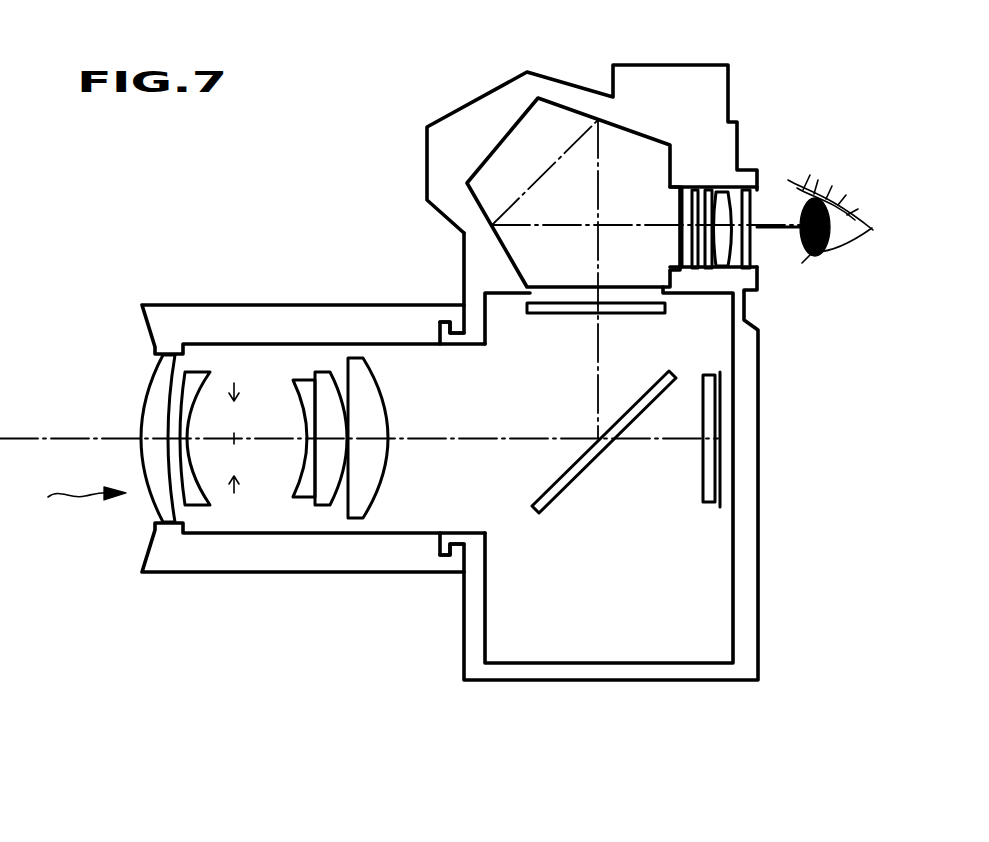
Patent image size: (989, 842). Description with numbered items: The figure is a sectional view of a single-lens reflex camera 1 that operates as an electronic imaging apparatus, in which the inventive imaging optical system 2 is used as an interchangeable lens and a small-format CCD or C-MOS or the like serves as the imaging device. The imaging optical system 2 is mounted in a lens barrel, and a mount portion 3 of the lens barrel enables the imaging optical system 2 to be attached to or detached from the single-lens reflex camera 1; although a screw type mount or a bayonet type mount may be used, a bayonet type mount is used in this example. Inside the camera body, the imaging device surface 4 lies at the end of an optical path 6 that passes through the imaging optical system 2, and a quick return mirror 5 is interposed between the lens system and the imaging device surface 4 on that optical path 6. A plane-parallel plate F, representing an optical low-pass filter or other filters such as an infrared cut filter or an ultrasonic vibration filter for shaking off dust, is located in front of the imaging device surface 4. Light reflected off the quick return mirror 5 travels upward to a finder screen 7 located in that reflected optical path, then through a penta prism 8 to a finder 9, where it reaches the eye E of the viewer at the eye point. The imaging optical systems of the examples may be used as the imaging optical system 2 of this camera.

The single-lens reflex camera 1 is at (758, 540).
The imaging optical system 2 is at (74, 497).
The mount portion 3 is at (446, 570).
The imaging device surface 4 is at (722, 458).
The quick return mirror 5 is at (555, 493).
The optical path 6 is at (63, 437).
The finder screen 7 is at (663, 313).
The penta prism 8 is at (517, 120).
The finder 9 is at (762, 282).
The eye of the viewer E is at (840, 218).
The optical low-pass filter F is at (708, 504).